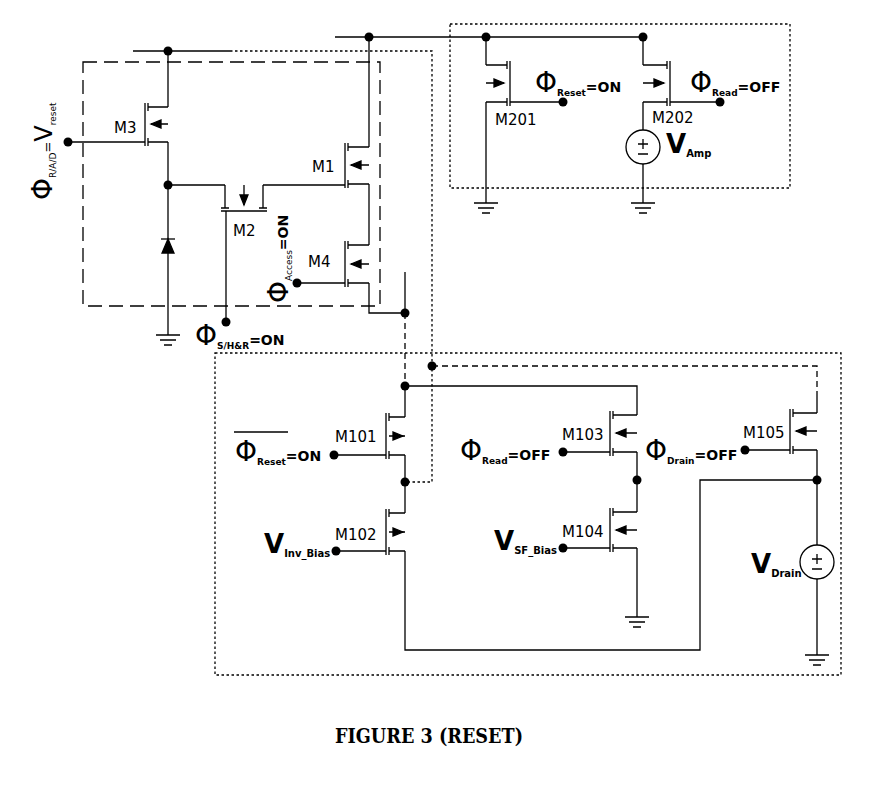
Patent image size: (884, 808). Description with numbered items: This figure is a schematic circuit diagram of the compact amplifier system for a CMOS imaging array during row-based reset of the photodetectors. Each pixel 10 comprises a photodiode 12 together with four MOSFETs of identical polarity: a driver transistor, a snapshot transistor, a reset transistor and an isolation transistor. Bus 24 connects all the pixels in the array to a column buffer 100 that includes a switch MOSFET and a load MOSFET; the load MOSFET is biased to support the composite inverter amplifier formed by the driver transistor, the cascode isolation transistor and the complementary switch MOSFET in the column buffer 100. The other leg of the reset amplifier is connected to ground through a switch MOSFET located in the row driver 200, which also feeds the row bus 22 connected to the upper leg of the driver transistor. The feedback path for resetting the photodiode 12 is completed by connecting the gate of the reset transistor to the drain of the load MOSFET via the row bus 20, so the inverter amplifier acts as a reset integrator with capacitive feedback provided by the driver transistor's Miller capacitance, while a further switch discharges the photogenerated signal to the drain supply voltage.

The pixel 10 is at (83, 73).
The photodiode 12 is at (165, 245).
The row bus 20 is at (192, 51).
The row bus 22 is at (360, 40).
The bus 24 is at (405, 325).
The column buffer 100 is at (612, 353).
The row driver 200 is at (585, 190).